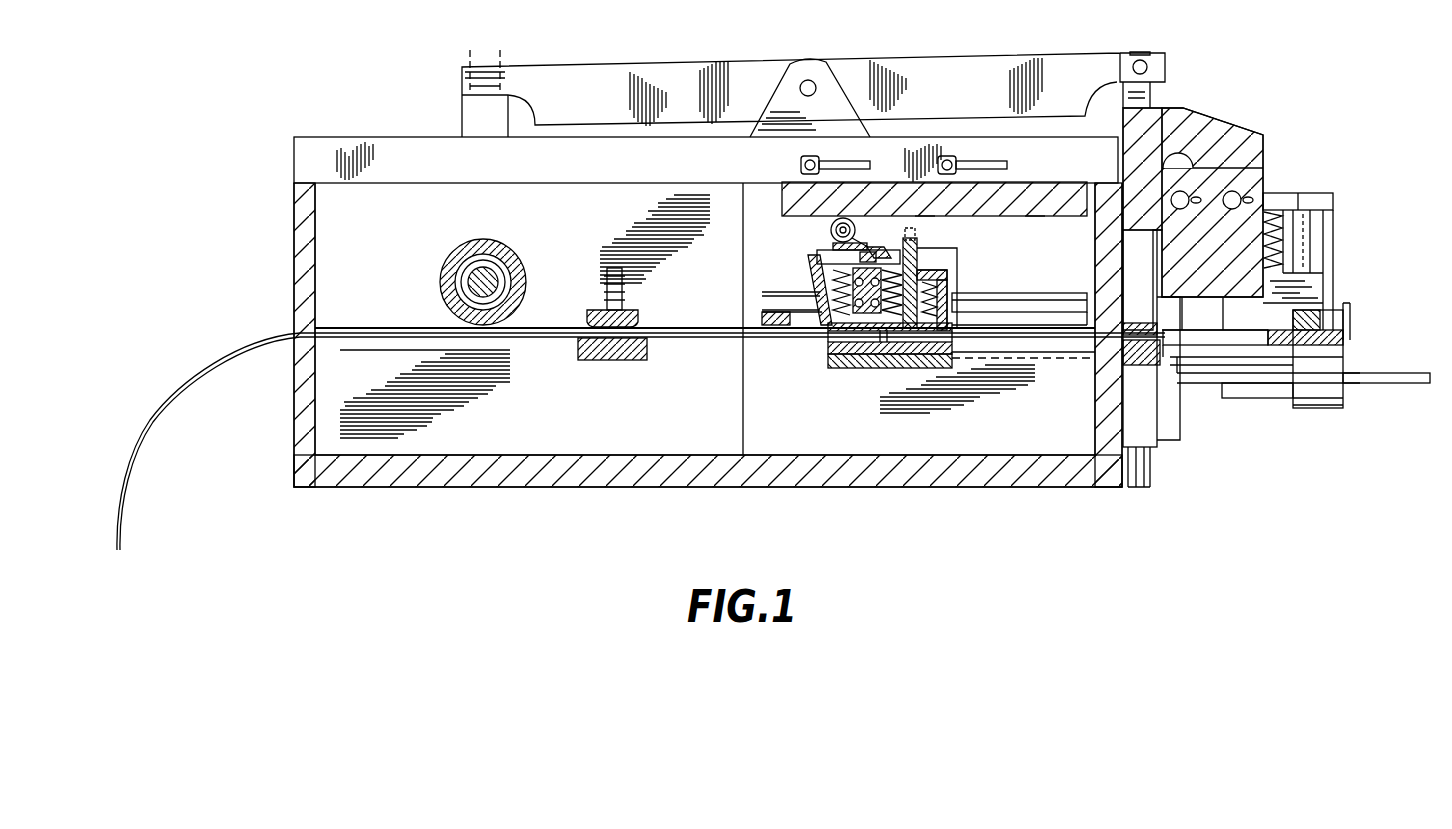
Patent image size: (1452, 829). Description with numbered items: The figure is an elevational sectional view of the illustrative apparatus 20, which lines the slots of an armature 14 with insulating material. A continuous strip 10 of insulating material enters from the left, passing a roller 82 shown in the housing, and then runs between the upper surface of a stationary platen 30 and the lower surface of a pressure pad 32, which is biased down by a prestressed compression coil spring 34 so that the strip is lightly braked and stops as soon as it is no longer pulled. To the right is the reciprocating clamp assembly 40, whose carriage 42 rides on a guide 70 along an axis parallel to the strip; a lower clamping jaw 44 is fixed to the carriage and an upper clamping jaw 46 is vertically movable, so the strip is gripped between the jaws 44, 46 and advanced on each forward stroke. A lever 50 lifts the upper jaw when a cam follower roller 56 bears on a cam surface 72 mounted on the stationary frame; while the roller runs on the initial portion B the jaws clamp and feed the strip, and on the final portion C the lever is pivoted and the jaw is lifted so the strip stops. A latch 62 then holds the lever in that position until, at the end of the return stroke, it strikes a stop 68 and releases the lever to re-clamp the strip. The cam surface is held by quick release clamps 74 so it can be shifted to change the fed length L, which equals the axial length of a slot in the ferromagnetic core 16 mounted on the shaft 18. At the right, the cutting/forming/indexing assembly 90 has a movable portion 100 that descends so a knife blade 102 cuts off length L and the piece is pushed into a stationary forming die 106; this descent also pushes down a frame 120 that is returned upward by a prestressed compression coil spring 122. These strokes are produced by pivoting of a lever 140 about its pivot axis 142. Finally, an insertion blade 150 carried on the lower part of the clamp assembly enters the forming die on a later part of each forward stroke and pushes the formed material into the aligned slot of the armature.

The continuous strip of insulating material 10 is at (220, 360).
The armature 14 is at (1337, 432).
The ferromagnetic core 16 is at (1310, 408).
The shaft 18 is at (1387, 386).
The apparatus 20 is at (372, 89).
The stationary platen 30 is at (578, 347).
The pressure pad 32 is at (587, 313).
The prestressed compression coil spring 34 is at (605, 293).
The reciprocating clamp assembly 40 is at (857, 387).
The carriage 42 is at (935, 254).
The lower clamping jaw 44 is at (908, 368).
The upper clamping jaw 46 is at (952, 331).
The lever 50 is at (830, 232).
The cam follower roller 56 is at (822, 215).
The latch 62 is at (813, 288).
The stop 68 is at (783, 326).
The guide 70 is at (1007, 305).
The cam surface 72 is at (790, 220).
The quick release clamps 74 is at (992, 160).
The roller 82 is at (477, 270).
The cutting/forming/indexing assembly 90 is at (1220, 94).
The movable portion 100 is at (1240, 147).
The knife blade 102 is at (1150, 370).
The stationary forming die 106 is at (1247, 353).
The frame 120 is at (1330, 233).
The prestressed compression coil spring 122 is at (1274, 210).
The lever 140 is at (628, 72).
The pivot axis 142 is at (814, 80).
The insertion blade 150 is at (1060, 360).
The initial portion of cam surface B is at (912, 200).
The final portion of cam surface C is at (1022, 210).
The length of strip L is at (1197, 327).